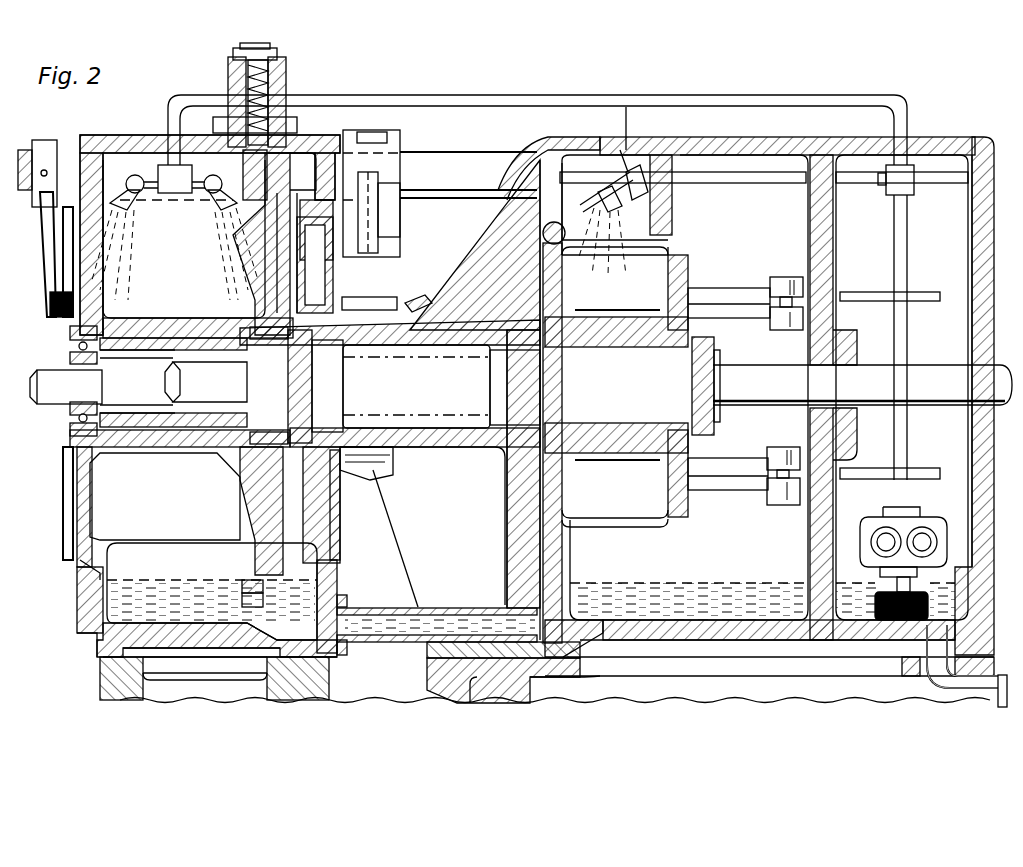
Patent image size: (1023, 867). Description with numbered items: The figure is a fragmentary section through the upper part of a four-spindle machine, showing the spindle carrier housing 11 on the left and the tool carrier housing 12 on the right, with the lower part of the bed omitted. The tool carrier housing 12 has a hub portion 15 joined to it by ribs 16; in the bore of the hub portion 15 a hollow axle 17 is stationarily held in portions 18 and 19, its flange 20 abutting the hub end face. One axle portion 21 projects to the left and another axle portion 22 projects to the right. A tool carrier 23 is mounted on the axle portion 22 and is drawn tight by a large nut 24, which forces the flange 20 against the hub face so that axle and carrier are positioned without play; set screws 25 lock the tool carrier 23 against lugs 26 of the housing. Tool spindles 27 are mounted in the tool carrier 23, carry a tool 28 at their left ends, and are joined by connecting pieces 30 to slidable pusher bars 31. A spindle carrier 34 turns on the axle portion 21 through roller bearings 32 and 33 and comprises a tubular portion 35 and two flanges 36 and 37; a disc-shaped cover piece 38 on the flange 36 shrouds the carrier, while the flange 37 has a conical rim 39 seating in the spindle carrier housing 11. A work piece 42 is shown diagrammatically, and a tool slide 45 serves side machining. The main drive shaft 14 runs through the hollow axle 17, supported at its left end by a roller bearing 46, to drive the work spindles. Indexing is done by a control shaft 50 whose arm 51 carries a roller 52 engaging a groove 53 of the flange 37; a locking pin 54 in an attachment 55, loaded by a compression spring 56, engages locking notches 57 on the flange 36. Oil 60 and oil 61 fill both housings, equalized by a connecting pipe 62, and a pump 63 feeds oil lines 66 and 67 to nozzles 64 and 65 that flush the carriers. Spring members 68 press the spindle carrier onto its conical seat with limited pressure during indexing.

The spindle carrier housing 11 is at (95, 653).
The tool carrier housing 12 is at (962, 602).
The main drive shaft 14 is at (942, 388).
The hub portion 15 is at (470, 340).
The ribs 16 is at (500, 252).
The hollow axle 17 is at (452, 396).
The axle portion 18 is at (512, 425).
The axle portion 19 is at (330, 338).
The flange 20 is at (305, 380).
The axle portion 21 is at (205, 392).
The axle portion 22 is at (642, 390).
The tool carrier 23 is at (676, 283).
The large nut 24 is at (705, 382).
The set screws 25 is at (545, 230).
The lugs 26 is at (575, 257).
The tool spindles 27 is at (730, 292).
The tool 28 is at (418, 298).
The connecting pieces 30 is at (790, 326).
The pusher bars 31 is at (856, 297).
The roller bearing 32 is at (184, 239).
The roller bearing 33 is at (252, 325).
The spindle carrier 34 is at (130, 308).
The tubular portion 35 is at (160, 322).
The flange 36 is at (262, 261).
The flange 37 is at (112, 295).
The cover piece 38 is at (340, 547).
The conical rim 39 is at (90, 562).
The work piece 42 is at (404, 496).
The tool slide 45 is at (375, 187).
The roller bearing 46 is at (70, 358).
The control shaft 50 is at (68, 147).
The arm 51 is at (50, 258).
The roller 52 is at (50, 303).
The groove 53 is at (64, 236).
The locking pin 54 is at (340, 107).
The attachment 55 is at (228, 74).
The compression spring 56 is at (284, 66).
The locking notches 57 is at (268, 174).
The oil 60 is at (168, 592).
The oil 61 is at (718, 592).
The connecting pipe 62 is at (383, 612).
The pump 63 is at (866, 542).
The nozzle 64 is at (612, 170).
The nozzle 65 is at (174, 193).
The oil line 66 is at (770, 180).
The oil line 67 is at (535, 103).
The spring members 68 is at (343, 486).